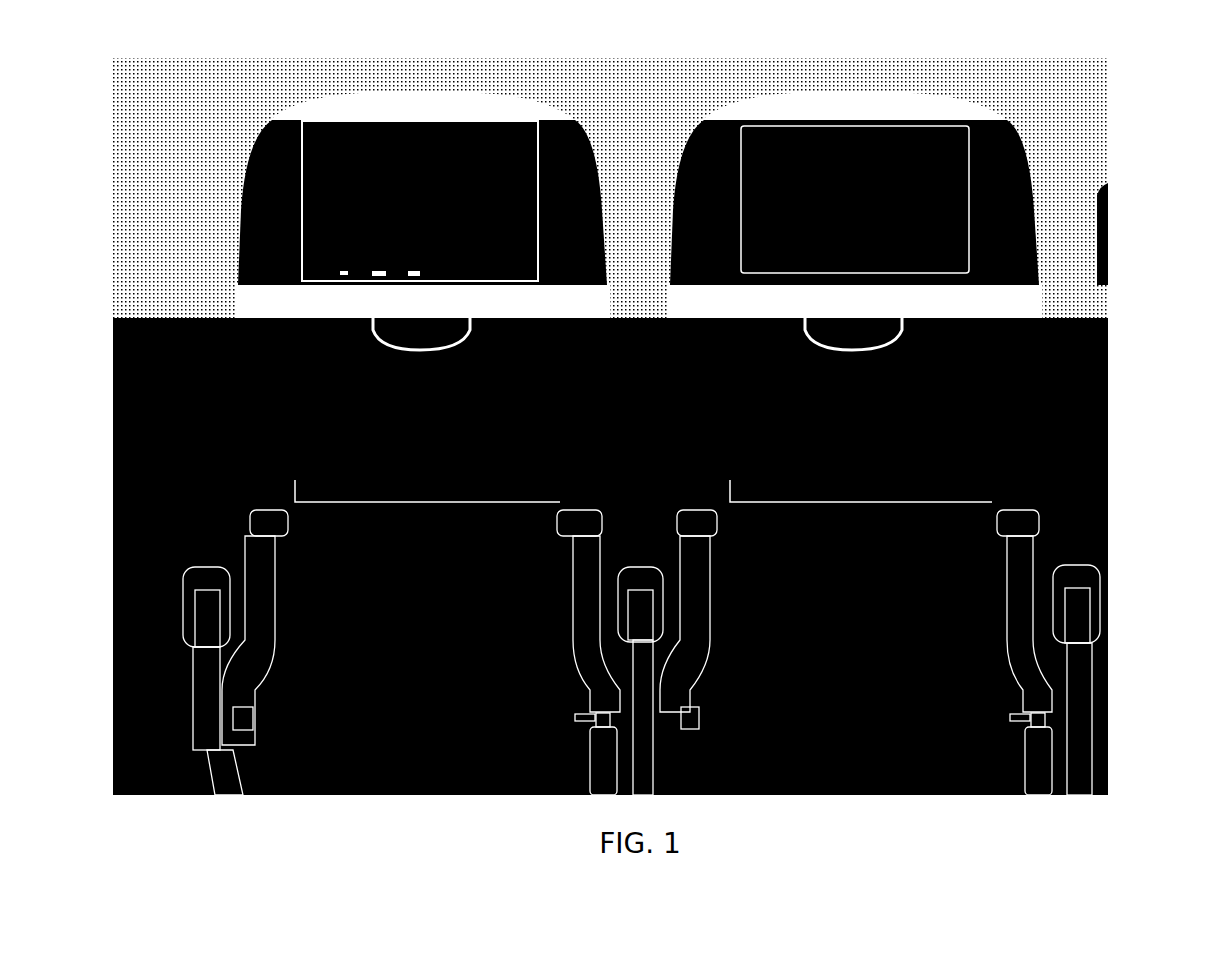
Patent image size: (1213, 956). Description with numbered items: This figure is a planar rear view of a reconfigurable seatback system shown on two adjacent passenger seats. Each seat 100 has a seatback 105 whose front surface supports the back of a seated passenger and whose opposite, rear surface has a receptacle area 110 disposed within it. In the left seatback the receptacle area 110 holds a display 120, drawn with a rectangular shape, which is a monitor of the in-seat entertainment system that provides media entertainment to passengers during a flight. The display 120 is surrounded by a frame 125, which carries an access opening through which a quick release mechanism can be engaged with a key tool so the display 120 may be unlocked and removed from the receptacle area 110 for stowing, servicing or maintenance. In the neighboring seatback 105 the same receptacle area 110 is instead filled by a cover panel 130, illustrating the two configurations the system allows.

The seat 100 is at (200, 303).
The seatback 105 is at (575, 175).
The receptacle area 110 is at (361, 152).
The display 120 is at (357, 150).
The frame 125 is at (487, 120).
The cover panel 130 is at (880, 147).